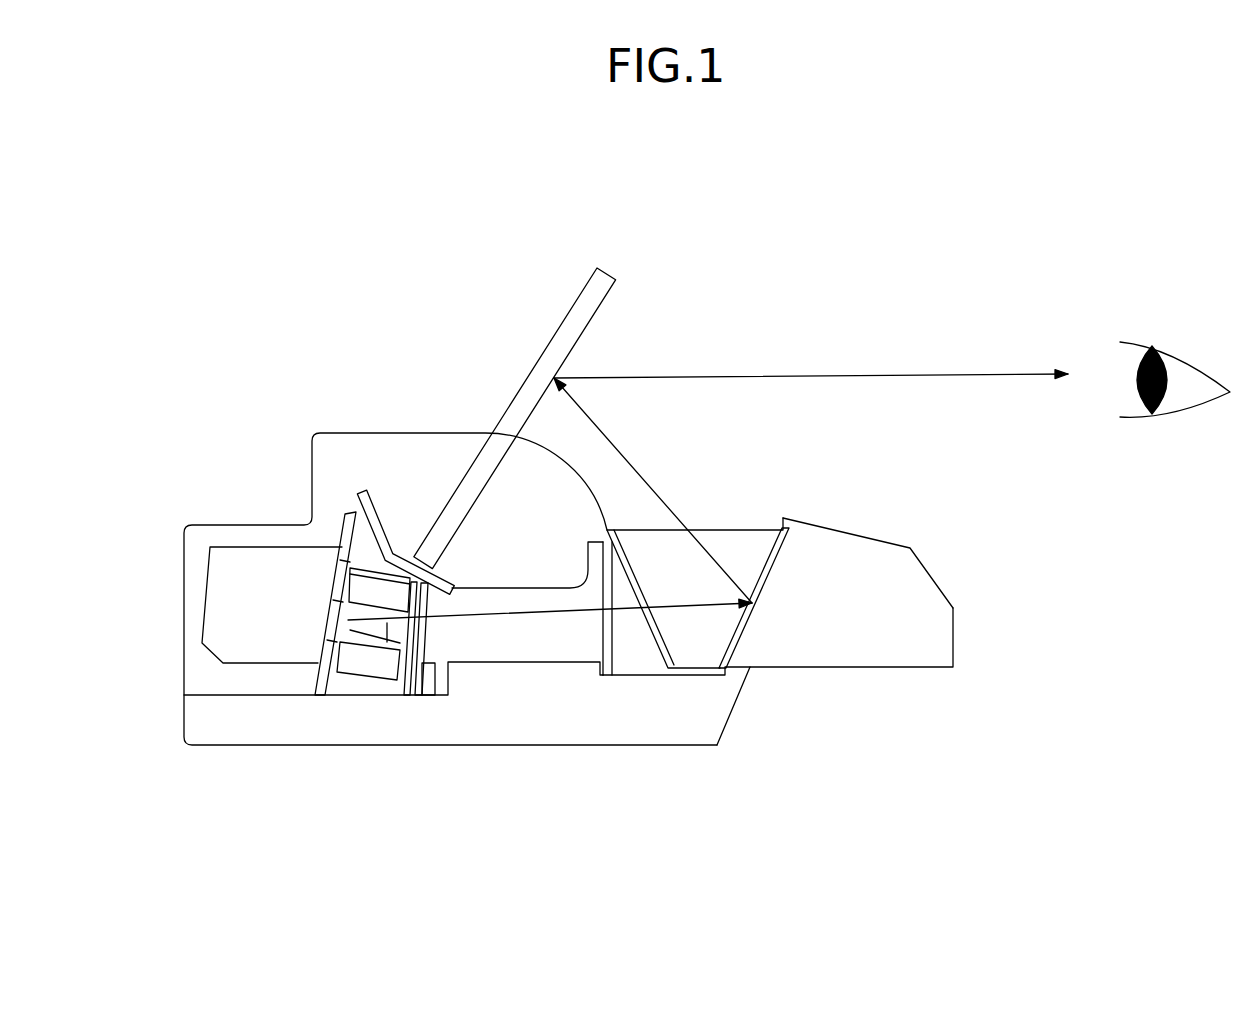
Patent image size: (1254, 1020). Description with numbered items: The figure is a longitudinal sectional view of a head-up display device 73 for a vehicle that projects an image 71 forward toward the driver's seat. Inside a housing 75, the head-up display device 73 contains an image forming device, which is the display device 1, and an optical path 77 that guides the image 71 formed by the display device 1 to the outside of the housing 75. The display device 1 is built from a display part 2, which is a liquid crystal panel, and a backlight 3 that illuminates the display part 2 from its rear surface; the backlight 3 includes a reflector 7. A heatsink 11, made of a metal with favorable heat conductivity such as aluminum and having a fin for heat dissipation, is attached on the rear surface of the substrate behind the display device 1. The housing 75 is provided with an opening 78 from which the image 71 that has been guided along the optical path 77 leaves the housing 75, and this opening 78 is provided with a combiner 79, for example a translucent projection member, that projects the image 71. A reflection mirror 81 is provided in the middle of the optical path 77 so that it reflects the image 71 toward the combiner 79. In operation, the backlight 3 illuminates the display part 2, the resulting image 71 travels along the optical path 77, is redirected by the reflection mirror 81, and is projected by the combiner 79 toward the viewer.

The display device 1 is at (522, 815).
The display part 2 is at (433, 641).
The backlight 3 is at (355, 687).
The reflector 7 is at (362, 555).
The heatsink 11 is at (268, 650).
The image 71 is at (943, 375).
The head-up display device 73 is at (727, 305).
The housing 75 is at (183, 578).
The optical path 77 is at (708, 460).
The opening 78 is at (775, 524).
The combiner 79 is at (555, 348).
The reflection mirror 81 is at (776, 575).